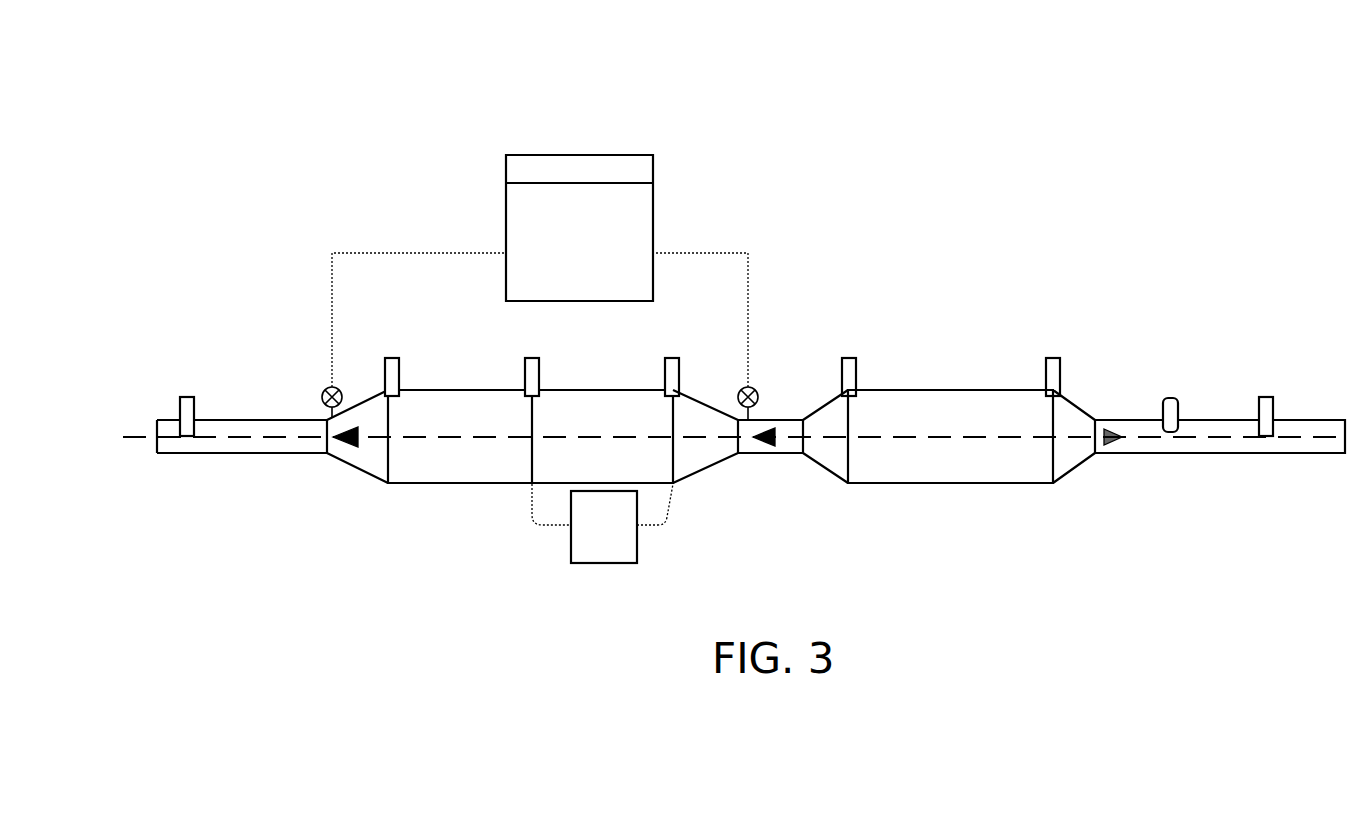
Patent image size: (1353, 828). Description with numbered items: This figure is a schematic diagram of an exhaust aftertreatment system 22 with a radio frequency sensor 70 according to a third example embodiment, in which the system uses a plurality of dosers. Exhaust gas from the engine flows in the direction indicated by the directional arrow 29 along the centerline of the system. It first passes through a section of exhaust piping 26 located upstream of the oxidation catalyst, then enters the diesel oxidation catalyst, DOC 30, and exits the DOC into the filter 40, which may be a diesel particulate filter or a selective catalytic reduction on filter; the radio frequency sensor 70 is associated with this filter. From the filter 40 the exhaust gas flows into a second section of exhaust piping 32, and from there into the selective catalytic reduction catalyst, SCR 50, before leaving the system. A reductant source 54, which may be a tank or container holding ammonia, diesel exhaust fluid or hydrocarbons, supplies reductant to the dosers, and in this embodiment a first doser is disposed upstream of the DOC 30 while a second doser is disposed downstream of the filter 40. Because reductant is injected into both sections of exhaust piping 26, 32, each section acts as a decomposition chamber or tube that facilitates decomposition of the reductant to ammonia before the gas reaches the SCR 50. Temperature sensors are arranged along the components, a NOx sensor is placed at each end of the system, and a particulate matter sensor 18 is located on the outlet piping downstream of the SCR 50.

The particulate matter sensor 18 is at (1168, 398).
The exhaust aftertreatment system 22 is at (1076, 120).
The section of exhaust piping 26 is at (348, 464).
The directional arrow 29 is at (702, 440).
The diesel oxidation catalyst 30 is at (413, 486).
The section of exhaust piping 32 is at (768, 455).
The filter 40 is at (652, 484).
The selective catalytic reduction catalyst 50 is at (943, 484).
The reductant source 54 is at (653, 220).
The radio frequency sensor 70 is at (593, 548).